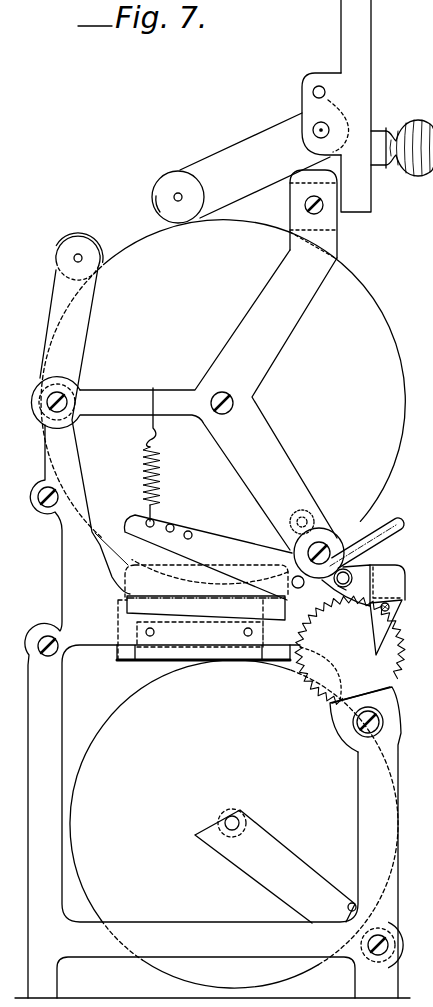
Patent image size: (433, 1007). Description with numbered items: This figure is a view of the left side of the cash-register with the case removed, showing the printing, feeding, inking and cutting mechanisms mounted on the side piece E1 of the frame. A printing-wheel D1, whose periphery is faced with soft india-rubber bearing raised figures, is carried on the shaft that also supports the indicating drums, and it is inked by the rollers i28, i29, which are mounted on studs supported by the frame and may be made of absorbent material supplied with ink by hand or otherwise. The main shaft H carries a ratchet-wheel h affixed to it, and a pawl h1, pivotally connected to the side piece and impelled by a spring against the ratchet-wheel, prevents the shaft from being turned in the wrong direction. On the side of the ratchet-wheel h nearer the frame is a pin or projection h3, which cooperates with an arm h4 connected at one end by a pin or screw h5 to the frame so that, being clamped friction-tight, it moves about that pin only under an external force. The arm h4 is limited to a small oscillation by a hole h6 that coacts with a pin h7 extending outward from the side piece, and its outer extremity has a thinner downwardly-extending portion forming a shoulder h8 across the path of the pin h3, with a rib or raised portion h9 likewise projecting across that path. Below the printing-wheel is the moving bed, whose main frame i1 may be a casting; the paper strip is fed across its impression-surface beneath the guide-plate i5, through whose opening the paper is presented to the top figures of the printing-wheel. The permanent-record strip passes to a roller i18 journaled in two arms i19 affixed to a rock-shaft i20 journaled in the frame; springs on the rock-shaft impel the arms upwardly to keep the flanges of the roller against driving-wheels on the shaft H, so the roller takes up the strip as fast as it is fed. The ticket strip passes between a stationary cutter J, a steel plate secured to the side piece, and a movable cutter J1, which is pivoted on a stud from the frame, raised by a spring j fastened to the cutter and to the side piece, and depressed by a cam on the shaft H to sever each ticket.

The inking roller i28 is at (78, 236).
The inking roller i29 is at (168, 172).
The printing-wheel D1 is at (139, 241).
The side piece E1 is at (262, 303).
The spring j is at (143, 464).
The movable cutter J1 is at (208, 557).
The guide-plate i5 is at (125, 586).
The stationary cutter J is at (127, 609).
The main frame i1 is at (56, 640).
The pin or screw h5 is at (321, 547).
The arm h4 is at (380, 547).
The pin h7 is at (352, 578).
The hole h6 is at (346, 588).
The shoulder h8 is at (406, 587).
The pin or projection h3 is at (392, 606).
The rib or raised portion h9 is at (378, 625).
The shaft H is at (350, 650).
The ratchet-wheel h is at (361, 690).
The pawl h1 is at (385, 717).
The roller i18 is at (86, 757).
The arms i19 is at (210, 852).
The rock-shaft i20 is at (375, 958).